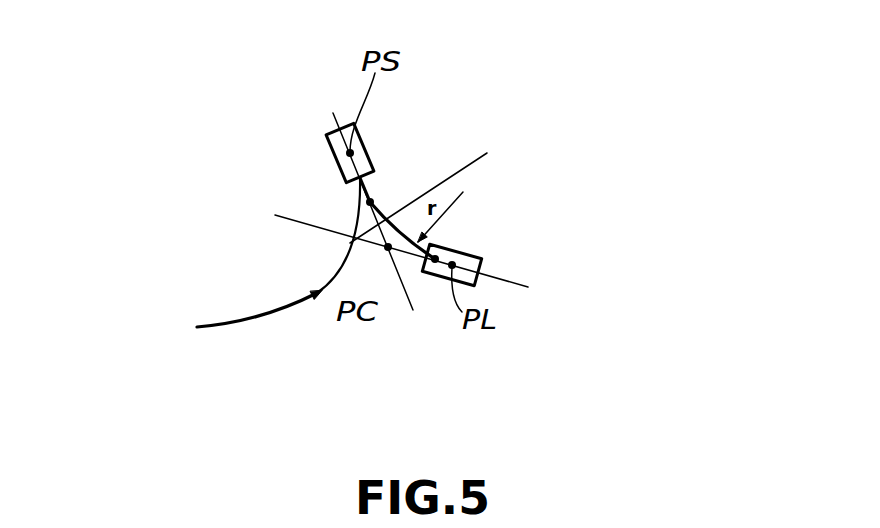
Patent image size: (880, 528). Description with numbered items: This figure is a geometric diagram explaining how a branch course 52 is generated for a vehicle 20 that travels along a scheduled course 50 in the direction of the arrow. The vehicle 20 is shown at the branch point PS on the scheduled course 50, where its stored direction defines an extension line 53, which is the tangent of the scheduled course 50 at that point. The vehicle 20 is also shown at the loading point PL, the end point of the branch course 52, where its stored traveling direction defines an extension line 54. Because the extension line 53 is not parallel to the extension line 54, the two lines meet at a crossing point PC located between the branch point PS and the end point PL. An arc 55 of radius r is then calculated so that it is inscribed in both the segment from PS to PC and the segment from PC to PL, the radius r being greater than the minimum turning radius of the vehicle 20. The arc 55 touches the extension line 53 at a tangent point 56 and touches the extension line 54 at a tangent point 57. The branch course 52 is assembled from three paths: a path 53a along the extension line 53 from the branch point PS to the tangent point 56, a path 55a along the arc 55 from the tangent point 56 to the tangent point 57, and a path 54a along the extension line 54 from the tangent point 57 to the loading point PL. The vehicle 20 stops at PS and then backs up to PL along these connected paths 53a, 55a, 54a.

The vehicle 20 is at (372, 165).
The scheduled course 50 is at (200, 327).
The branch course 52 is at (550, 190).
The extension line 53 is at (413, 310).
The path 53a is at (346, 184).
The extension line 54 is at (526, 289).
The path 54a is at (436, 262).
The arc 55 is at (425, 245).
The path 55a is at (350, 243).
The tangent point 56 is at (372, 200).
The tangent point 57 is at (436, 247).